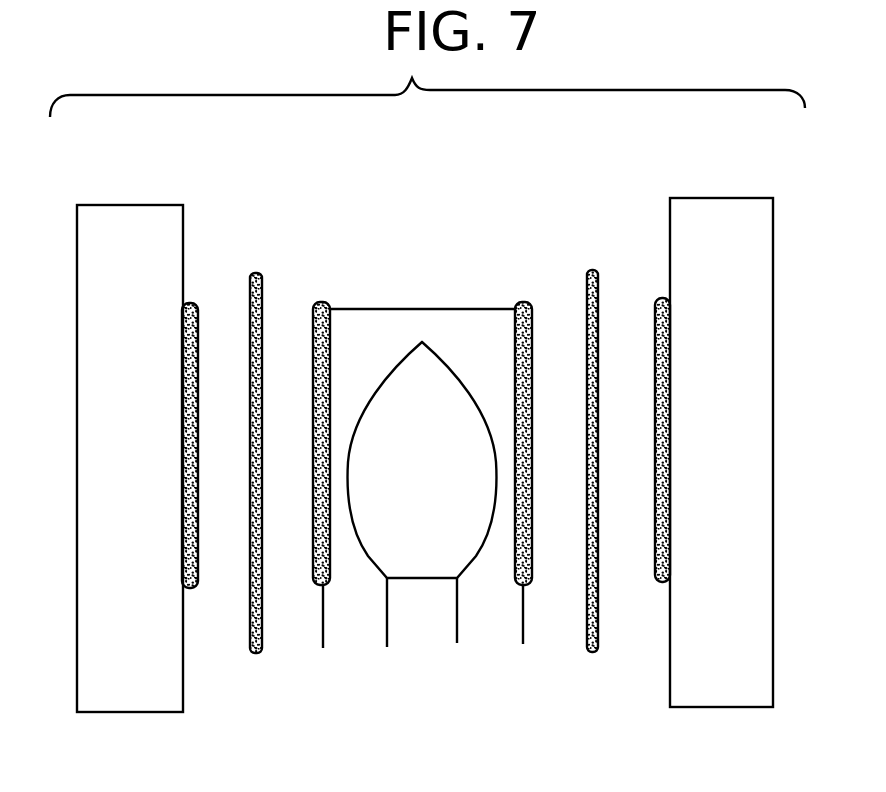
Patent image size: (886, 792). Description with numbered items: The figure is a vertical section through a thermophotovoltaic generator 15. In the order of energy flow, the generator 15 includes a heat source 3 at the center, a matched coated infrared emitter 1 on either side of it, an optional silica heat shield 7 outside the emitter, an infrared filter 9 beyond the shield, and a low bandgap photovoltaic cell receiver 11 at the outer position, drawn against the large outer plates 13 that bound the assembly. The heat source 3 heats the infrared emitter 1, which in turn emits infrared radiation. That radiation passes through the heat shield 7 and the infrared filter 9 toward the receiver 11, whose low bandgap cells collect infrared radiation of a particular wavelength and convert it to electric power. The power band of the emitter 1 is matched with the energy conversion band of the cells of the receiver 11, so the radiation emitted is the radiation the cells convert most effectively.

The matched coated infrared emitter 1 is at (317, 558).
The heat source 3 is at (380, 567).
The silica heat shield 7 is at (250, 592).
The infrared filter 9 is at (198, 383).
The low bandgap photovoltaic cell receiver 11 is at (182, 375).
The plate 13 is at (77, 412).
The thermophotovoltaic generator 15 is at (621, 165).